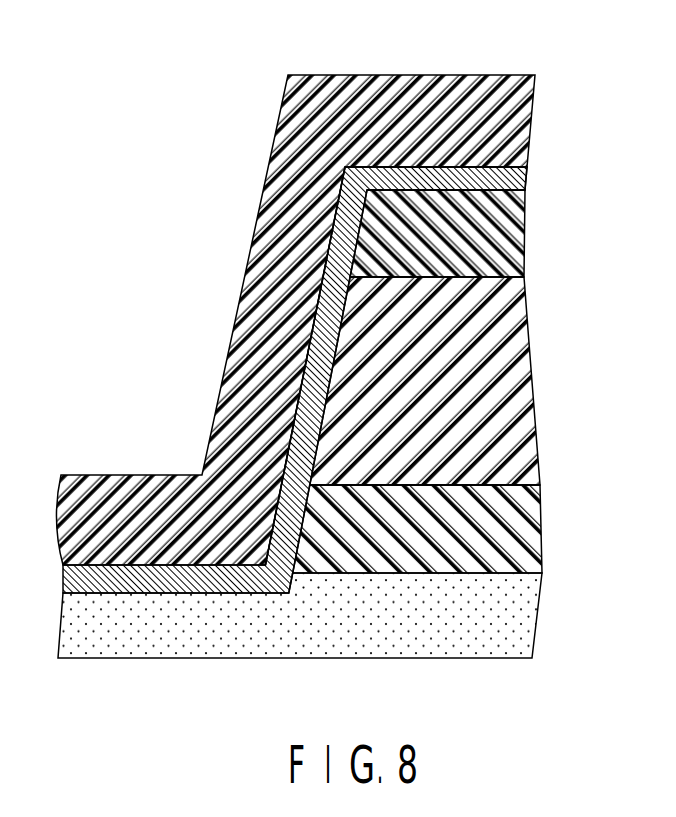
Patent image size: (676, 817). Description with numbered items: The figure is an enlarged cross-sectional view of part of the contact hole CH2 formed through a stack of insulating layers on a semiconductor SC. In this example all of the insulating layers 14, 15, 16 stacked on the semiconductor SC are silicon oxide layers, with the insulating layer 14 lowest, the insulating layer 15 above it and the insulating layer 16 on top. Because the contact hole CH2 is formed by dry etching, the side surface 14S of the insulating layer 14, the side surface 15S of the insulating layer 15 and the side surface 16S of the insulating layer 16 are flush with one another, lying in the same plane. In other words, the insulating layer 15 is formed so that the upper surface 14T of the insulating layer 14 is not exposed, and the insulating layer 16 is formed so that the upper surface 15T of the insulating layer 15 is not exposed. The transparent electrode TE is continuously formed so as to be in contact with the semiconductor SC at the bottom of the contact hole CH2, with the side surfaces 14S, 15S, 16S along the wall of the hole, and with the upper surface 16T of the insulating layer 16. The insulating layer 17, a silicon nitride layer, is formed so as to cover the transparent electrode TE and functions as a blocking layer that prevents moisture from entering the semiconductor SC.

The insulating layer 17 is at (528, 118).
The transparent electrode TE is at (527, 178).
The insulating layer 16 is at (526, 248).
The insulating layer 15 is at (528, 360).
The insulating layer 14 is at (540, 538).
The semiconductor SC is at (532, 616).
The upper surface of the insulating layer 16 16T is at (435, 178).
The upper surface of the insulating layer 15 15T is at (462, 270).
The upper surface of the insulating layer 14 14T is at (464, 480).
The side surface of the insulating layer 16 16S is at (350, 225).
The side surface of the insulating layer 15 15S is at (314, 410).
The side surface of the insulating layer 14 14S is at (290, 507).
The contact hole CH2 is at (186, 290).